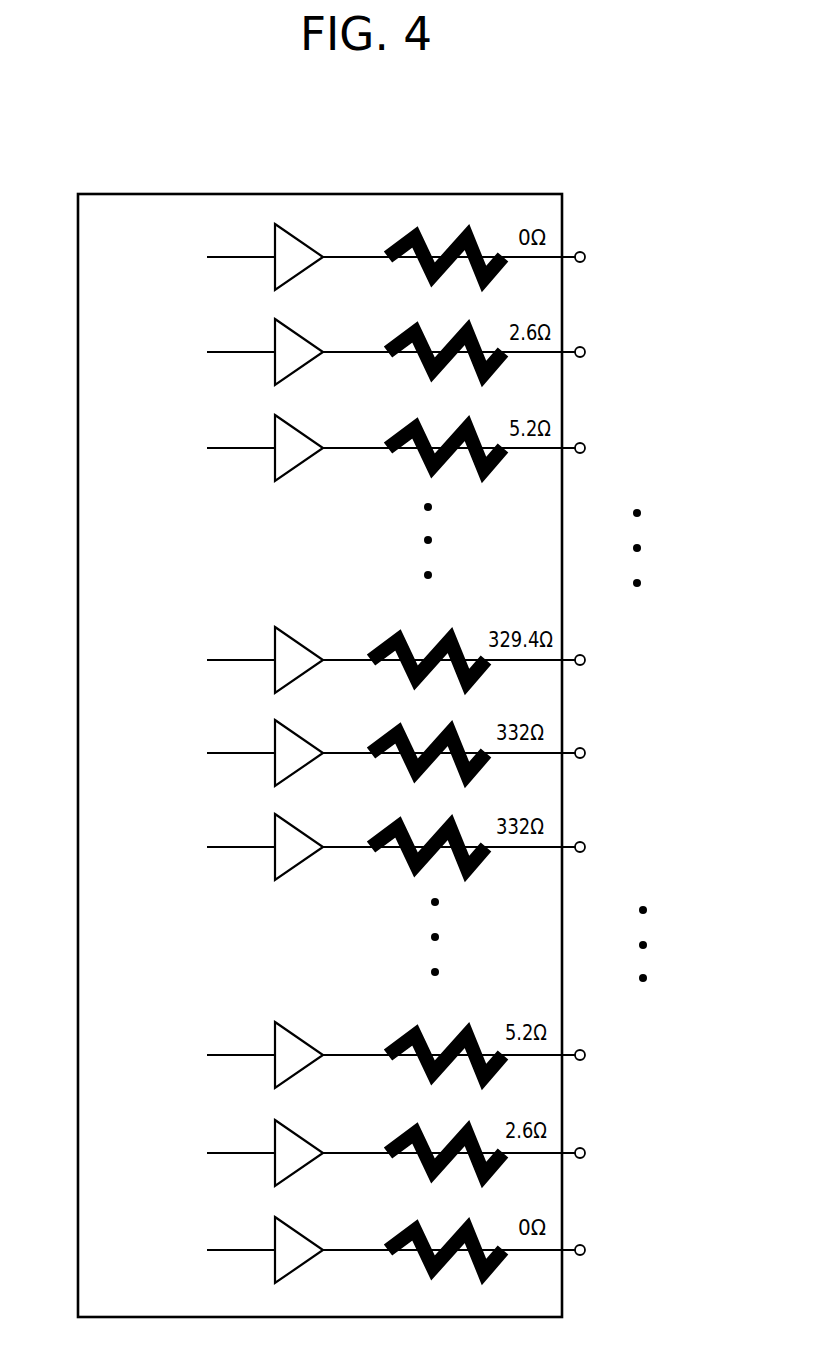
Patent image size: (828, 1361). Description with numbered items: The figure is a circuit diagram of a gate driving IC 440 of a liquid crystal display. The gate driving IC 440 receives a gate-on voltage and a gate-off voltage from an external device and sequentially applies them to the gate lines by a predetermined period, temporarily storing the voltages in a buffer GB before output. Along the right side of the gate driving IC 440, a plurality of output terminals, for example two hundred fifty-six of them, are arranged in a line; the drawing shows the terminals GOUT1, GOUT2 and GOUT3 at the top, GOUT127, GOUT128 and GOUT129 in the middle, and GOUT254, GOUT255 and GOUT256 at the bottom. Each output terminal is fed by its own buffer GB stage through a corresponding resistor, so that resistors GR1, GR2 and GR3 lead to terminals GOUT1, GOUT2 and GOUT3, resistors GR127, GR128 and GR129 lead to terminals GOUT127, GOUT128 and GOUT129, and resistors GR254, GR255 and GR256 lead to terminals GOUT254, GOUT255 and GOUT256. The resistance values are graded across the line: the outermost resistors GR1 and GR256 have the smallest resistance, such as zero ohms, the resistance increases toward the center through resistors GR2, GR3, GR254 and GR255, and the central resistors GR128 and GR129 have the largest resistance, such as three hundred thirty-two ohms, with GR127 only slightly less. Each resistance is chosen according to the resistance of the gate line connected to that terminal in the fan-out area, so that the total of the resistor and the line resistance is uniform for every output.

The gate driving IC 440 is at (378, 194).
The buffer GB is at (303, 238).
The resistor GR1 is at (445, 239).
The resistor GR2 is at (445, 334).
The resistor GR3 is at (445, 430).
The resistor GR127 is at (428, 642).
The resistor GR128 is at (428, 735).
The resistor GR129 is at (428, 829).
The resistor GR254 is at (445, 1036).
The resistor GR255 is at (445, 1134).
The resistor GR256 is at (445, 1231).
The output terminal GOUT1 is at (621, 257).
The output terminal GOUT2 is at (621, 352).
The output terminal GOUT3 is at (621, 448).
The output terminal GOUT127 is at (632, 660).
The output terminal GOUT128 is at (632, 753).
The output terminal GOUT129 is at (632, 847).
The output terminal GOUT254 is at (632, 1055).
The output terminal GOUT255 is at (632, 1153).
The output terminal GOUT256 is at (632, 1250).